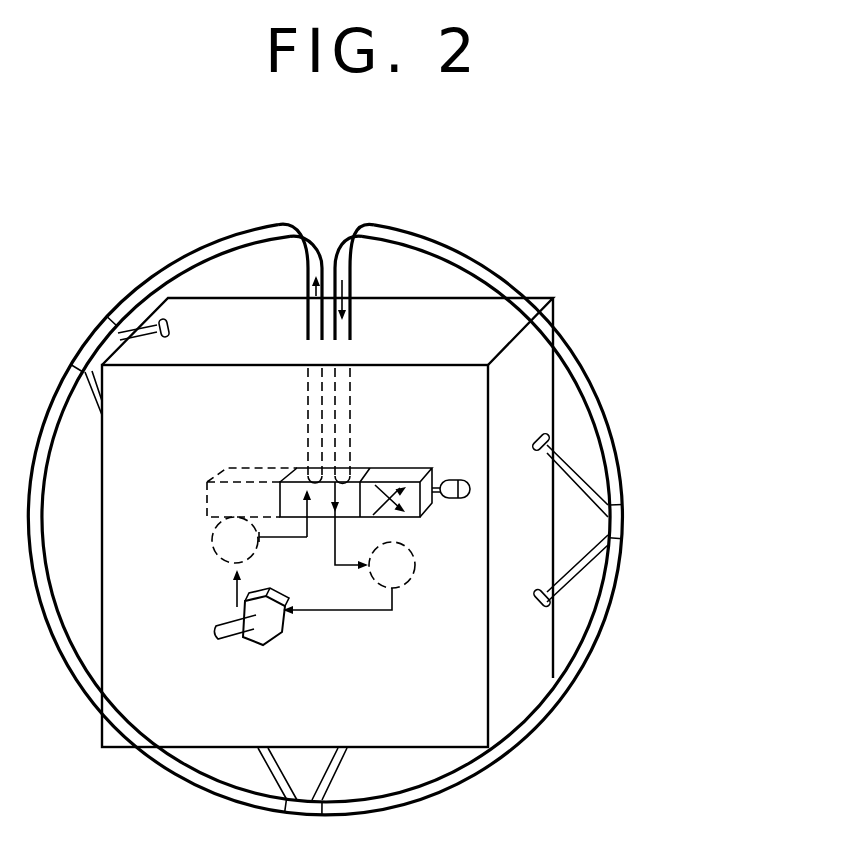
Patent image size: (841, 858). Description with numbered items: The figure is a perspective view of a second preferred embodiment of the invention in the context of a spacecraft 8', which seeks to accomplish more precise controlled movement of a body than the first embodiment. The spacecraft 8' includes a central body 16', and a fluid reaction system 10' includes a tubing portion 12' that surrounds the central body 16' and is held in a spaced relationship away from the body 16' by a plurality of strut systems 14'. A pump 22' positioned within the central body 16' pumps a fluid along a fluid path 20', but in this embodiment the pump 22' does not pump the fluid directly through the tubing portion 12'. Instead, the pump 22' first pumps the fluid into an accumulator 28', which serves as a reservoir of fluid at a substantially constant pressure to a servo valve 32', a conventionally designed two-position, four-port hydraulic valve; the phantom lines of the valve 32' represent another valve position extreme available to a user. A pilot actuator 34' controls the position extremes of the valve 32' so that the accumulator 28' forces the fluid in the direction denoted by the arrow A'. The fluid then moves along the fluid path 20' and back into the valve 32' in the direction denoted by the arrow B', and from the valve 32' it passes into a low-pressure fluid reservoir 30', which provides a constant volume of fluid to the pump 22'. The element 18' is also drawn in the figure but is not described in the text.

The spacecraft 8' is at (396, 309).
The fluid reaction system 10' is at (243, 310).
The tubing portion 12' is at (344, 520).
The strut systems 14' is at (355, 540).
The central body 16' is at (295, 556).
The housing top 18' is at (327, 443).
The fluid path 20' is at (340, 519).
The pump 22' is at (240, 636).
The accumulator 28' is at (202, 562).
The low-pressure fluid reservoir 30' is at (373, 578).
The servo valve 32' is at (319, 488).
The pilot actuator 34' is at (439, 455).
The arrow A' is at (269, 313).
The arrow B' is at (382, 314).